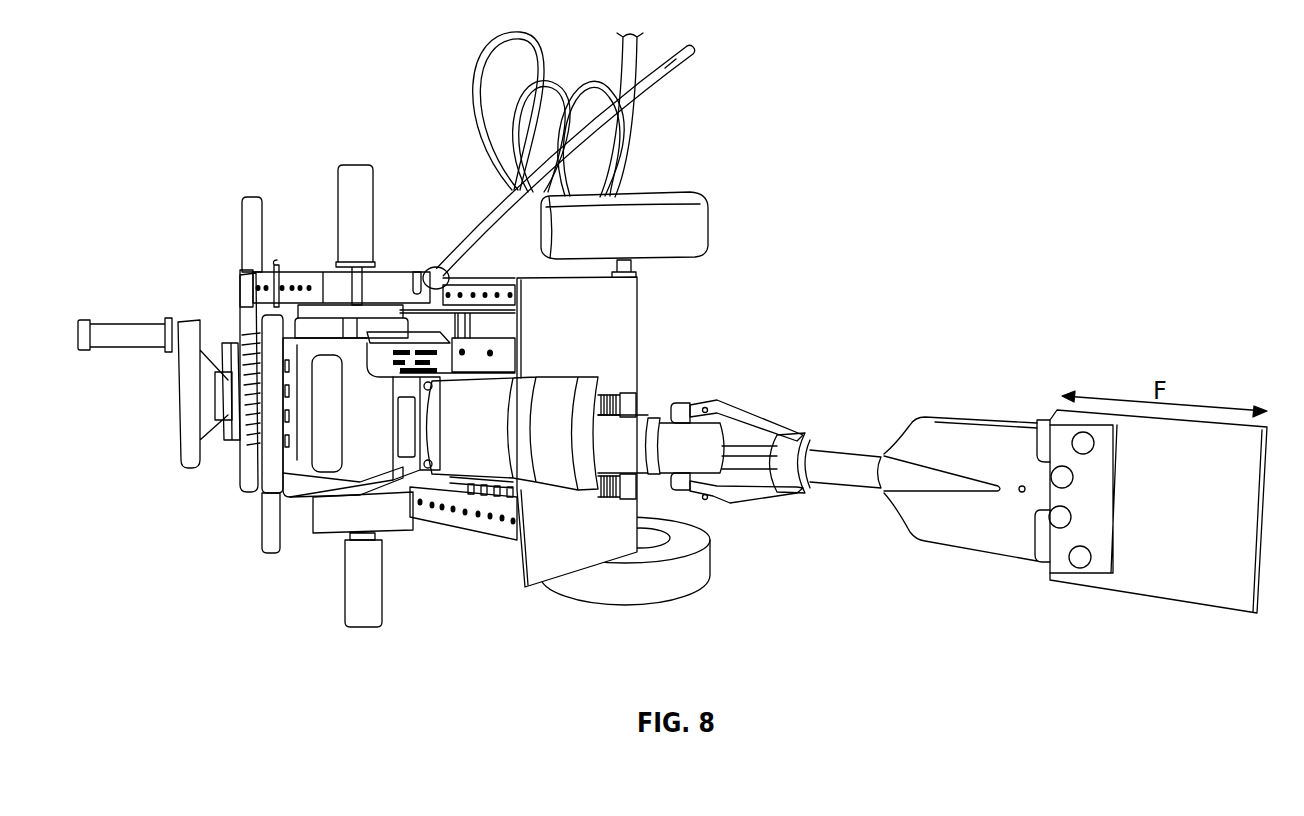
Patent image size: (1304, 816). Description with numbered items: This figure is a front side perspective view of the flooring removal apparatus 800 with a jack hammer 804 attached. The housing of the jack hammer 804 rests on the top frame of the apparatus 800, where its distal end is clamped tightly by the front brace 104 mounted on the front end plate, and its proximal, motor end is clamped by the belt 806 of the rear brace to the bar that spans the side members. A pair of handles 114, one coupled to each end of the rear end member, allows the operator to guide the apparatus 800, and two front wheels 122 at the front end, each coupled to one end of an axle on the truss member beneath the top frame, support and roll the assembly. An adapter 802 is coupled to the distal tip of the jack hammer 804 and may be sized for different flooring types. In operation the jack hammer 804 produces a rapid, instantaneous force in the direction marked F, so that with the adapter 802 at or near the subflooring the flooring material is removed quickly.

The tissue compression system 800 is at (922, 147).
The front wheels 122 is at (677, 193).
The front brace 104 is at (503, 395).
The handles 114 is at (241, 228).
The belt 806 is at (272, 455).
The jack hammer 804 is at (365, 452).
The adapter 802 is at (1152, 600).